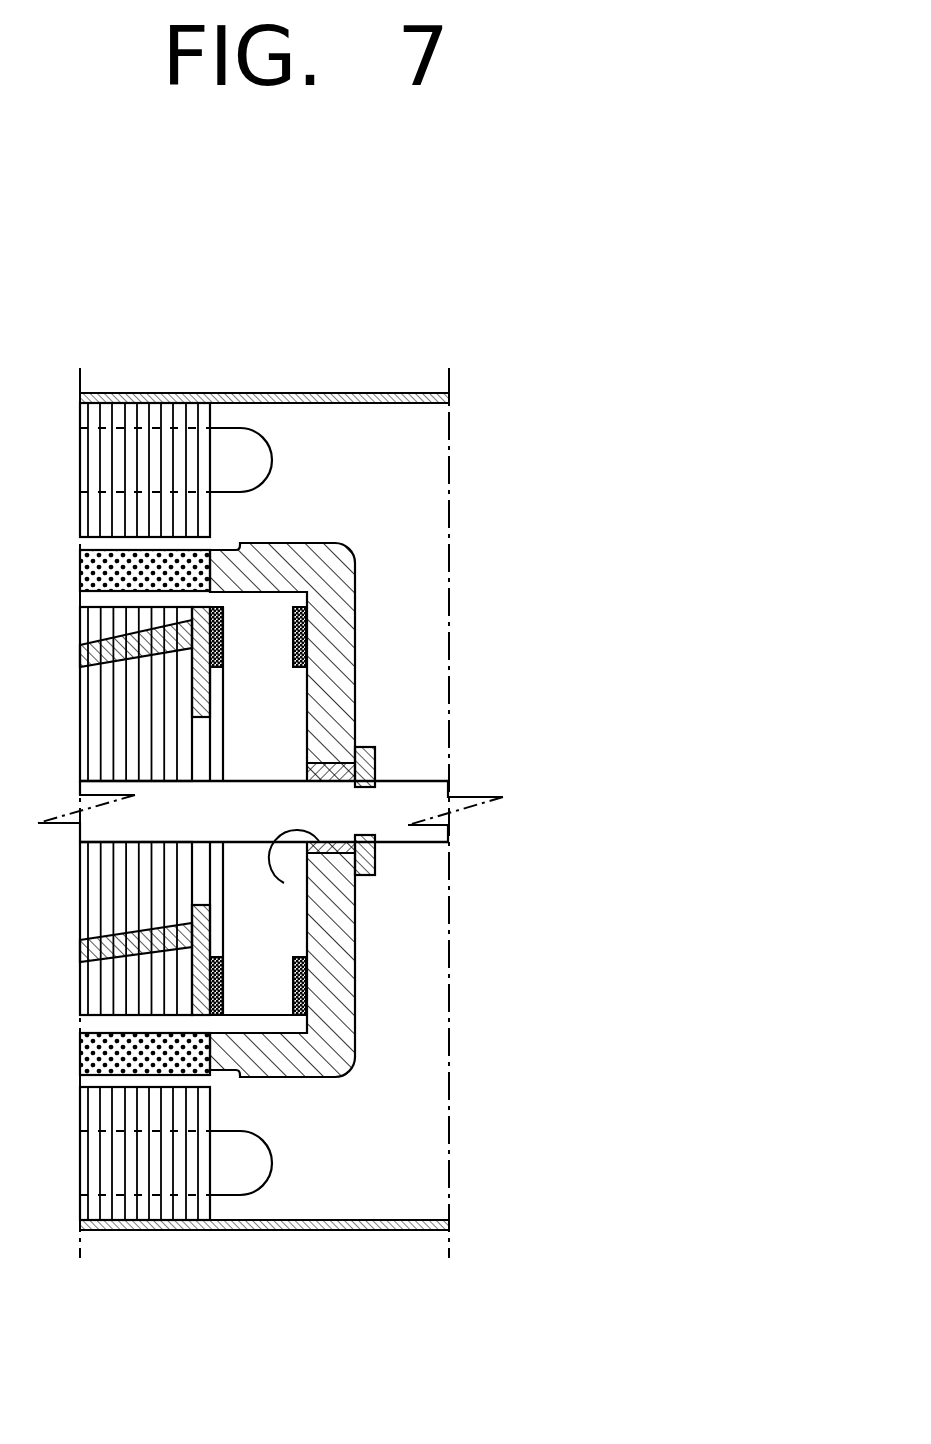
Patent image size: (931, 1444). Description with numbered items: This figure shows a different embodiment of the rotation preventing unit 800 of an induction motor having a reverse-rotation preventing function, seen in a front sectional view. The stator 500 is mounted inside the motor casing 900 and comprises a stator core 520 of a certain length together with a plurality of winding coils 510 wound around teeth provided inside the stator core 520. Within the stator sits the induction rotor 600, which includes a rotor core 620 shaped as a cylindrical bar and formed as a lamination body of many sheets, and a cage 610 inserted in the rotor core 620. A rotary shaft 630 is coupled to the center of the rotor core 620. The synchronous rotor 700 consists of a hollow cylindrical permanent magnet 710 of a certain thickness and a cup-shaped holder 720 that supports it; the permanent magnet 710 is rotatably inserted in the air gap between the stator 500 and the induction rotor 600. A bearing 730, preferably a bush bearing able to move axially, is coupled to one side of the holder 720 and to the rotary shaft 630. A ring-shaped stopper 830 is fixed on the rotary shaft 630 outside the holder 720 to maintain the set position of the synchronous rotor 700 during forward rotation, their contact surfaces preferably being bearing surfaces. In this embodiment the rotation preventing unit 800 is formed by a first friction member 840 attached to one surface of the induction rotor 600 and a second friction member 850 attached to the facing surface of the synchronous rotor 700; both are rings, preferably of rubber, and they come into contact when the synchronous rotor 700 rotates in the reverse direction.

The stator 500 is at (402, 1332).
The winding coils 510 is at (286, 1186).
The stator core 520 is at (219, 1209).
The induction rotor 600 is at (582, 965).
The cage 610 is at (236, 947).
The rotor core 620 is at (186, 1026).
The rotary shaft 630 is at (432, 812).
The synchronous rotor 700 is at (392, 297).
The permanent magnet 710 is at (166, 537).
The holder 720 is at (311, 521).
The bearing 730 is at (298, 893).
The rotation preventing unit 800 is at (582, 577).
The stopper 830 is at (376, 763).
The first friction member 840 is at (224, 653).
The second friction member 850 is at (307, 619).
The motor casing 900 is at (176, 378).